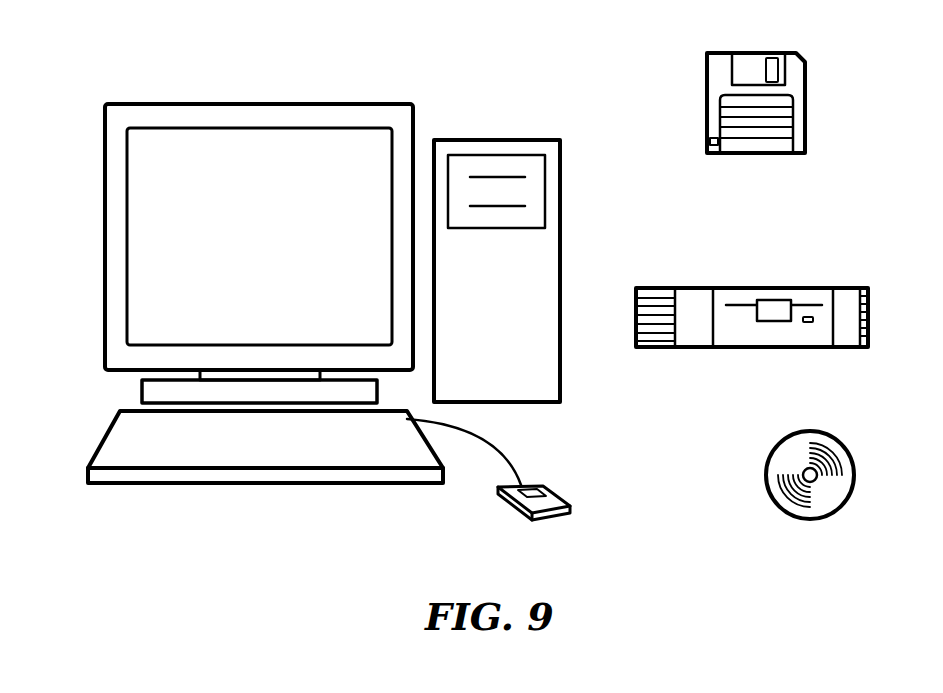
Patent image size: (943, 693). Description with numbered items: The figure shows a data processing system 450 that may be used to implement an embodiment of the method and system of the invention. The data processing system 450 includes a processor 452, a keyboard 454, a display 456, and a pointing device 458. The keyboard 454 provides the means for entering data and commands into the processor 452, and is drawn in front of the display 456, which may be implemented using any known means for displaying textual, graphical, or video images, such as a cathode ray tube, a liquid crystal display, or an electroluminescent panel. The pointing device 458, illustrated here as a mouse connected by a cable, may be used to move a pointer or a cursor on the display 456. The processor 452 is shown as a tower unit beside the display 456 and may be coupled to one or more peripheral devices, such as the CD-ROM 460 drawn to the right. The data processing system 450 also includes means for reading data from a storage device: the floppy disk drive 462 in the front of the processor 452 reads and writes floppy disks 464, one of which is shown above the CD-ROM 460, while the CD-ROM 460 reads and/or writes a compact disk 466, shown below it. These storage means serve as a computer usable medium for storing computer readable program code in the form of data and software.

The data processing system 450 is at (88, 92).
The processor 452 is at (477, 140).
The keyboard 454 is at (118, 411).
The display 456 is at (350, 104).
The pointing device 458 is at (550, 490).
The CD-ROM 460 is at (792, 288).
The floppy disk drive 462 is at (544, 155).
The floppy disk 464 is at (740, 53).
The compact disk 466 is at (793, 432).